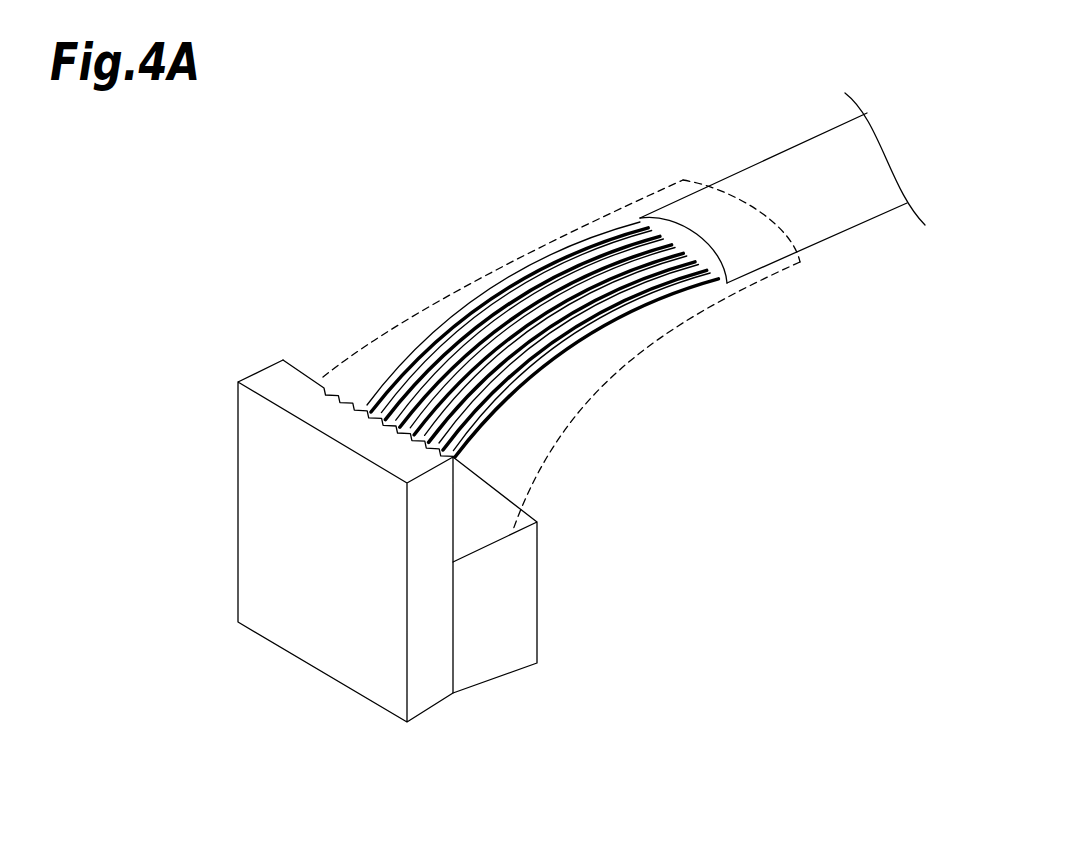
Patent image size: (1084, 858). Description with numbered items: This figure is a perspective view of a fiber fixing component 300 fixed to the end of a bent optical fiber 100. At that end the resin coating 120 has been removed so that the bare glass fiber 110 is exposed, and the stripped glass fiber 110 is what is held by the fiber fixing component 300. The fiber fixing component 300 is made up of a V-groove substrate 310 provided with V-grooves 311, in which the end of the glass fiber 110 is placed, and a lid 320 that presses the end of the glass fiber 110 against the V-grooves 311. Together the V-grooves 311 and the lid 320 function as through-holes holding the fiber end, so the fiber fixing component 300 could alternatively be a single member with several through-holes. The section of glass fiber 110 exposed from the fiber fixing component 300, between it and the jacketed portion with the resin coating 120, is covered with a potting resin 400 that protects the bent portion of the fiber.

The bent optical fiber 100 is at (646, 275).
The glass fiber 110 is at (620, 313).
The resin coating 120 is at (717, 287).
The fiber fixing component 300 is at (350, 503).
The V-groove substrate 310 is at (310, 503).
The V-grooves 311 is at (299, 376).
The lid 320 is at (518, 580).
The potting resin 400 is at (482, 280).